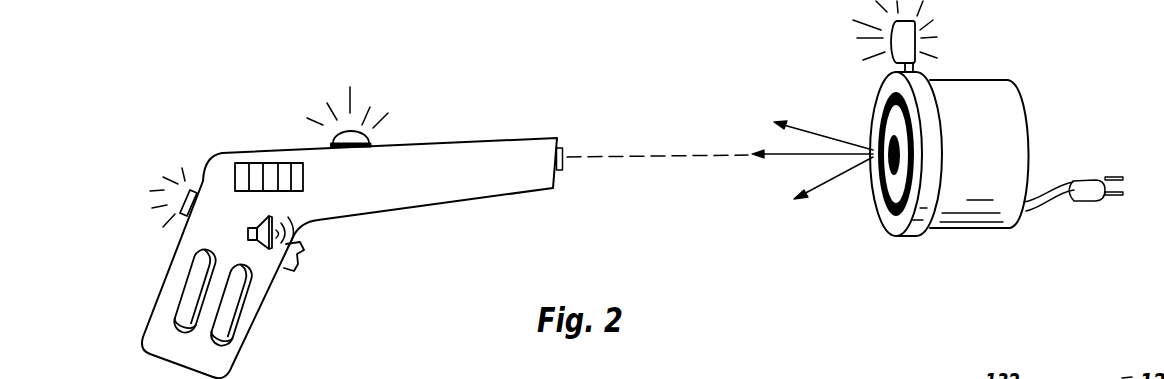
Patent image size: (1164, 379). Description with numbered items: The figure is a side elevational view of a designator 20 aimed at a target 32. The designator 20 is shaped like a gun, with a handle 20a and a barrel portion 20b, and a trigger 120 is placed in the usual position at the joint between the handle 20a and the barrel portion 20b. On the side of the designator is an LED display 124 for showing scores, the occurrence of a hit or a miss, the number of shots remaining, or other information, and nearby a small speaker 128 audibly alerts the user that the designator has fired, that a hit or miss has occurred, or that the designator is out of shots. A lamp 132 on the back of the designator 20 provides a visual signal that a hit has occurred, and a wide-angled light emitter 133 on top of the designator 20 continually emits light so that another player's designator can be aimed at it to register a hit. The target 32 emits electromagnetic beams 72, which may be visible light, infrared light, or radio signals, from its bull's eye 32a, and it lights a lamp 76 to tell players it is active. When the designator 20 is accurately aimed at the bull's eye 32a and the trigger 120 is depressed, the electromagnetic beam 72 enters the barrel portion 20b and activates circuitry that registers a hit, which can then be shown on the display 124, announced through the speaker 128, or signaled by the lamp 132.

The designator 20 is at (364, 258).
The handle 20a is at (236, 358).
The barrel portion 20b is at (527, 192).
The target 32 is at (979, 189).
The bull's eye 32a is at (893, 172).
The electromagnetic beams 72 is at (731, 158).
The lamp 76 is at (917, 42).
The trigger 120 is at (300, 259).
The LED display 124 is at (237, 172).
The speaker 128 is at (263, 247).
The lamp 132 is at (181, 214).
The wide-angled light emitter 133 is at (368, 135).